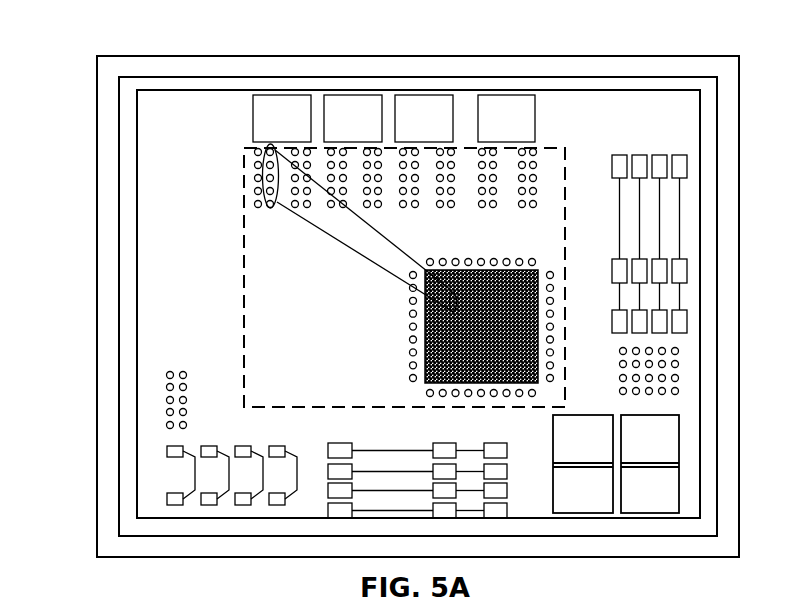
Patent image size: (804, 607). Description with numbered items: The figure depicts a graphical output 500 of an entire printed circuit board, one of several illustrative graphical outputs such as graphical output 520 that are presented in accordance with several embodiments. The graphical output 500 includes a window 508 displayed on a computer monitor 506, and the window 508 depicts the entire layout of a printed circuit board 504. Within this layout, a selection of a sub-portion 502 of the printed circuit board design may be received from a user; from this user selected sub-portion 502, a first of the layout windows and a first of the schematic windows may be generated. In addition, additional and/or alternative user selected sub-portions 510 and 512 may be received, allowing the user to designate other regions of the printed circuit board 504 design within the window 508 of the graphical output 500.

The graphical output 500 is at (72, 58).
The sub-portion 502 is at (551, 147).
The printed circuit board 504 is at (189, 98).
The computer monitor 506 is at (563, 54).
The window 508 is at (474, 73).
The user selected sub-portion 510 is at (262, 196).
The user selected sub-portion 512 is at (452, 312).
The graphical output 520 is at (31, 606).